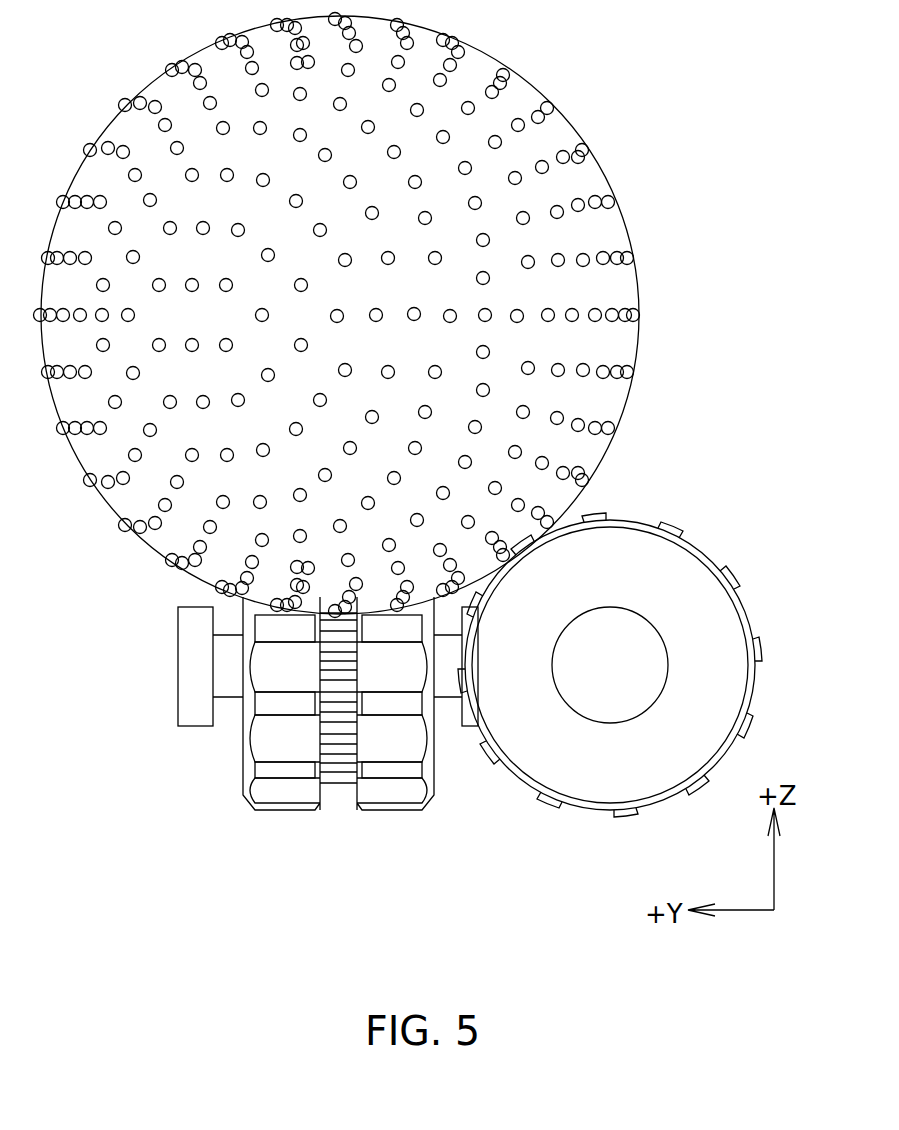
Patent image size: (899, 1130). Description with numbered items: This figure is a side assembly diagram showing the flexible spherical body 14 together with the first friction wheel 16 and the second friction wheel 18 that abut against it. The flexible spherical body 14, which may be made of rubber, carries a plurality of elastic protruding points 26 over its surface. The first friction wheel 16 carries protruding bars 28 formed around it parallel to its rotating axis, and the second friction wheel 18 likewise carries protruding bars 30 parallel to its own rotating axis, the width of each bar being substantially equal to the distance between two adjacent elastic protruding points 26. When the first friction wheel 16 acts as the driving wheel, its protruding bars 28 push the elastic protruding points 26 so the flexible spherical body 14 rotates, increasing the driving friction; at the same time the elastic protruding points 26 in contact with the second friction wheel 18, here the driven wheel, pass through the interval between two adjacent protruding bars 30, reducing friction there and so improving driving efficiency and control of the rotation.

The flexible spherical body 14 is at (118, 127).
The first friction wheel 16 is at (195, 664).
The second friction wheel 18 is at (722, 657).
The elastic protruding points 26 is at (556, 530).
The protruding bars 28 is at (256, 711).
The protruding bars 30 is at (619, 503).